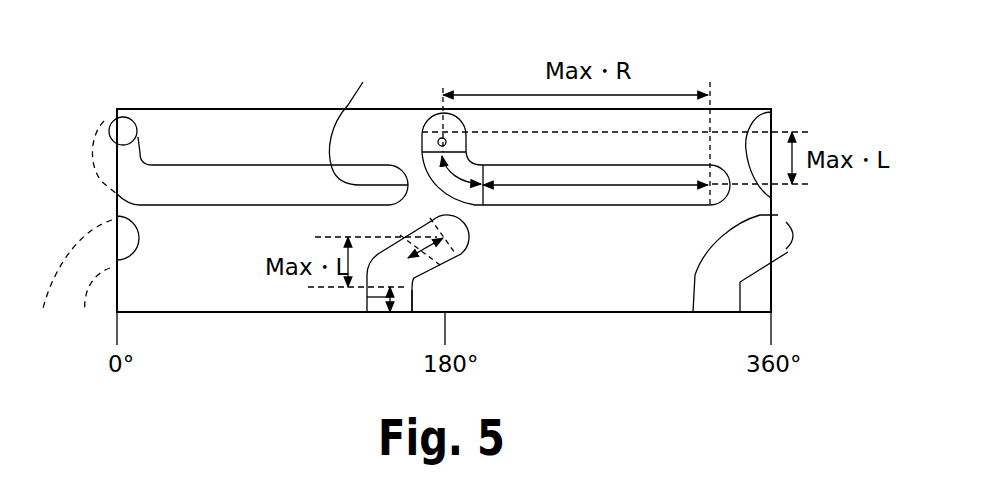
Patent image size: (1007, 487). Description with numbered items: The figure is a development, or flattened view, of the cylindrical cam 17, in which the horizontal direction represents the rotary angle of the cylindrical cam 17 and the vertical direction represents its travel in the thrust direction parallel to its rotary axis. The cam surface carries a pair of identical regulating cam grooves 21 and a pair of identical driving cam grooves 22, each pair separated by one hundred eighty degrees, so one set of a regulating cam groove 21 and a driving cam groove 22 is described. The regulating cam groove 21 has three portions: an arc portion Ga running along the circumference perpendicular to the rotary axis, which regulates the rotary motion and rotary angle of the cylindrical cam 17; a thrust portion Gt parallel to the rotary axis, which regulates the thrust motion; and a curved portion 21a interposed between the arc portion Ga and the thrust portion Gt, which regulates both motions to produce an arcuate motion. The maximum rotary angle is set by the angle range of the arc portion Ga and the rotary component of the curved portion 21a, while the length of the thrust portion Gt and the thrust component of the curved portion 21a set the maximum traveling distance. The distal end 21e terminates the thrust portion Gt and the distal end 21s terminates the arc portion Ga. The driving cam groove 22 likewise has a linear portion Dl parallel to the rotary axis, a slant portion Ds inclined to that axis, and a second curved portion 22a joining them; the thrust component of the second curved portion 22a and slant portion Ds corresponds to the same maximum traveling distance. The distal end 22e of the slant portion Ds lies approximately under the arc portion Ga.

The cylindrical cam 17 is at (482, 24).
The regulating cam groove 21 is at (219, 160).
The distal end of the thrust portion 21e is at (134, 130).
The distal end of the arc portion 21s is at (368, 126).
The curved groove portion 21a is at (457, 178).
The driving cam groove 22 is at (128, 259).
The distal end of the slant portion 22e is at (139, 242).
The second curved portion 22a is at (414, 279).
The thrust groove portion Gt is at (438, 142).
The arc groove portion Ga is at (588, 187).
The slant portion Ds is at (509, 288).
The linear portion Dl is at (367, 297).